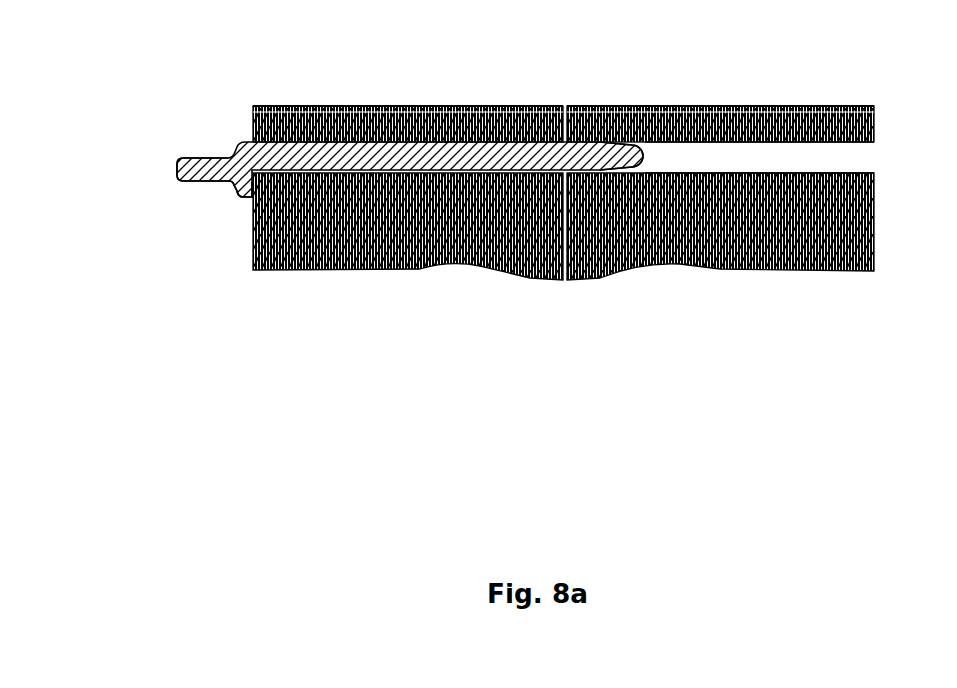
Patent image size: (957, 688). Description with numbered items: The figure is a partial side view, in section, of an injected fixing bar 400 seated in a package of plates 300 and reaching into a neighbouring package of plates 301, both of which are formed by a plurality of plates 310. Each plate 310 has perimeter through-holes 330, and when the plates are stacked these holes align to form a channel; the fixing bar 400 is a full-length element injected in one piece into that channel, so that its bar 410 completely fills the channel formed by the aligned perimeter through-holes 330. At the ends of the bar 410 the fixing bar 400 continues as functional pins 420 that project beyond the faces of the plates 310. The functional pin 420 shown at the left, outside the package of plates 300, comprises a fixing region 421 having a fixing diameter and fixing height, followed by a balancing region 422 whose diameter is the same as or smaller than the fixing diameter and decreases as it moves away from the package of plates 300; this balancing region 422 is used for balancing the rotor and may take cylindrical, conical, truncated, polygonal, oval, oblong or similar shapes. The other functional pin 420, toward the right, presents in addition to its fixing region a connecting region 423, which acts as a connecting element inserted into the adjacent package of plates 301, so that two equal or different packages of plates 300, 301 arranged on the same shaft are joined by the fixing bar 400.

The package of plates 300 is at (298, 292).
The package of plates 301 is at (850, 292).
The plate 310 is at (503, 108).
The perimeter through-hole 330 is at (873, 148).
The injected fixing bar 400 is at (412, 139).
The bar 410 is at (350, 107).
The functional pin 420 is at (187, 159).
The fixing region 421 is at (242, 196).
The balancing region 422 is at (202, 184).
The connecting region 423 is at (613, 110).